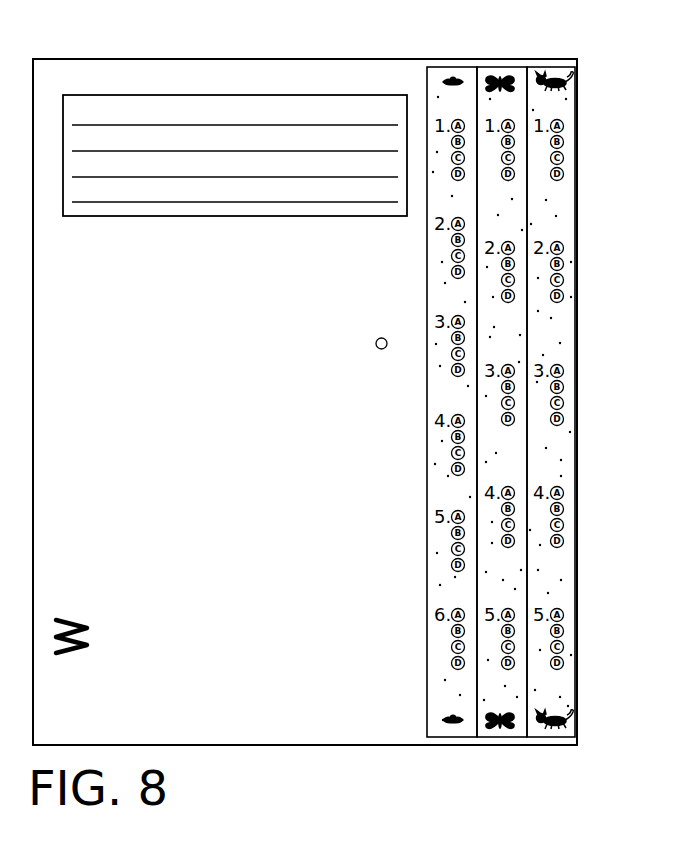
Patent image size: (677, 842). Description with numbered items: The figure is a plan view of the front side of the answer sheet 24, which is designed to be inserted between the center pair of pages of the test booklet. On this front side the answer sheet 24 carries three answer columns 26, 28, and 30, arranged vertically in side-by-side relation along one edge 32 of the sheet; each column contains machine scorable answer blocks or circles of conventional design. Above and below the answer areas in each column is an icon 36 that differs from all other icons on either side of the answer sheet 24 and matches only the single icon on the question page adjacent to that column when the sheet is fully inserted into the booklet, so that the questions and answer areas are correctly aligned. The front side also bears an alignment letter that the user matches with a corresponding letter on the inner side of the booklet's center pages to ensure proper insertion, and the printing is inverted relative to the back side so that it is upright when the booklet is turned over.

The answer sheet 24 is at (235, 528).
The answer column 26 is at (548, 334).
The answer column 28 is at (558, 222).
The answer column 30 is at (521, 131).
The edge of the answer sheet 32 is at (547, 470).
The icon 36 is at (545, 64).